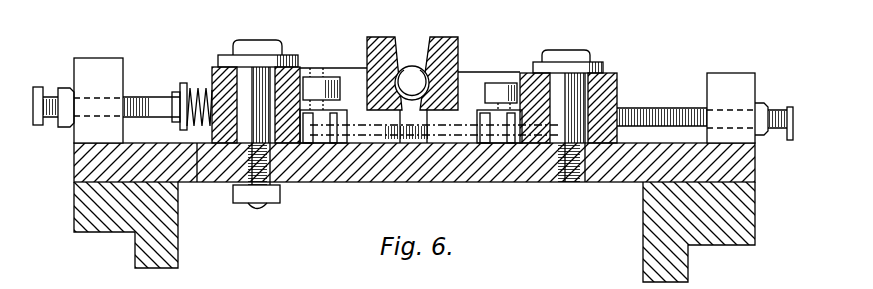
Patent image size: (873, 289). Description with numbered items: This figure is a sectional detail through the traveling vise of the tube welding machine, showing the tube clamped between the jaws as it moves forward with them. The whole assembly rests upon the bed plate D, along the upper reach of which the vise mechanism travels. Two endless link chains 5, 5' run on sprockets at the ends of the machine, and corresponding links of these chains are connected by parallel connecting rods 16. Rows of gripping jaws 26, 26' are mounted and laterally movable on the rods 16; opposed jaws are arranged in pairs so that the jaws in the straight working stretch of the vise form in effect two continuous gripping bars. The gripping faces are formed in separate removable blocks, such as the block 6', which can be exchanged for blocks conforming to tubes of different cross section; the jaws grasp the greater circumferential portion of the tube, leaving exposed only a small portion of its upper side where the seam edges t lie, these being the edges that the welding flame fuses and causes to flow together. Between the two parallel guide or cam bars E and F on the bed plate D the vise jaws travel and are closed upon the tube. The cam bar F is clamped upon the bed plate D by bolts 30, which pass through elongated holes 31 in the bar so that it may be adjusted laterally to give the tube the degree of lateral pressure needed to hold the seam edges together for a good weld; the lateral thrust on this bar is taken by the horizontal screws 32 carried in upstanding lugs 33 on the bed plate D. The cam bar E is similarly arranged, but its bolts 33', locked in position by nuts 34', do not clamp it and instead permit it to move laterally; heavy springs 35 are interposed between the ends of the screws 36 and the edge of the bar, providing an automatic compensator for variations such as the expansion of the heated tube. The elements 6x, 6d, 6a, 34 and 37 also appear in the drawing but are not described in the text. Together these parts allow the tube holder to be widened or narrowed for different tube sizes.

The bed plate D is at (615, 183).
The heavy springs 35 is at (197, 183).
The end block 37 is at (95, 68).
The screws 36 is at (140, 107).
The cam bar E is at (275, 81).
The bolts 33' is at (210, 87).
The clamp bolt 34 is at (262, 95).
The nuts 34' is at (258, 222).
The guide piece 6d is at (333, 76).
The endless chain 5 is at (323, 176).
The connecting rods 16 is at (392, 143).
The gripping jaw 26 is at (362, 190).
The gripping jaw 26' is at (461, 189).
The V-block holder 6x is at (425, 45).
The gripping block 6' is at (470, 68).
The tube seam edges t is at (412, 65).
The guide piece 6a is at (498, 92).
The endless chain 5' is at (502, 176).
The cam bar F is at (525, 70).
The bolts 30 is at (572, 110).
The elongated holes 31 is at (590, 130).
The horizontal screws 32 is at (672, 108).
The upstanding lugs 33 is at (750, 91).